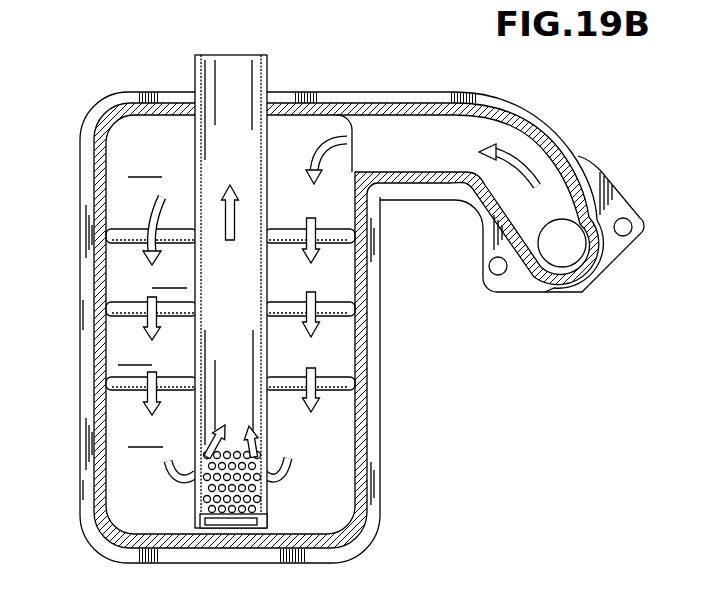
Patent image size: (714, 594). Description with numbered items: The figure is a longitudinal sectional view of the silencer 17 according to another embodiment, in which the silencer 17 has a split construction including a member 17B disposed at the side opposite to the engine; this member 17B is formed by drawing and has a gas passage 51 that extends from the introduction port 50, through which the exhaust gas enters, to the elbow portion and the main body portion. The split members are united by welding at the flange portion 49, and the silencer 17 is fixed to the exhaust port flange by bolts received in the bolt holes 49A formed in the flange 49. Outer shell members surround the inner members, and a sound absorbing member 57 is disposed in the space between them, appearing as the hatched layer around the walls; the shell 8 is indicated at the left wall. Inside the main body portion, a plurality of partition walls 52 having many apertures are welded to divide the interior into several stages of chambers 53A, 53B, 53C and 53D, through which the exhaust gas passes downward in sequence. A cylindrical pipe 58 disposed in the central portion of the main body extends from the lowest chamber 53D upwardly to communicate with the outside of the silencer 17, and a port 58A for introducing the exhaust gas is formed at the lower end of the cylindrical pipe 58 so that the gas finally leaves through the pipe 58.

The muffler shell 8 is at (92, 459).
The silencer 17 is at (72, 330).
The member disposed at the opposite side to the engine 17B is at (334, 105).
The flange portion 49 is at (603, 190).
The bolt holes 49A is at (624, 229).
The introduction port 50 is at (563, 265).
The gas passage 51 is at (407, 128).
The partition walls 52 is at (138, 312).
The chamber 53A is at (223, 210).
The chamber 53B is at (232, 310).
The chamber 53C is at (218, 392).
The chamber 53D is at (207, 453).
The sound absorbing member 57 is at (433, 175).
The cylindrical pipe 58 is at (255, 351).
The port 58A is at (267, 480).